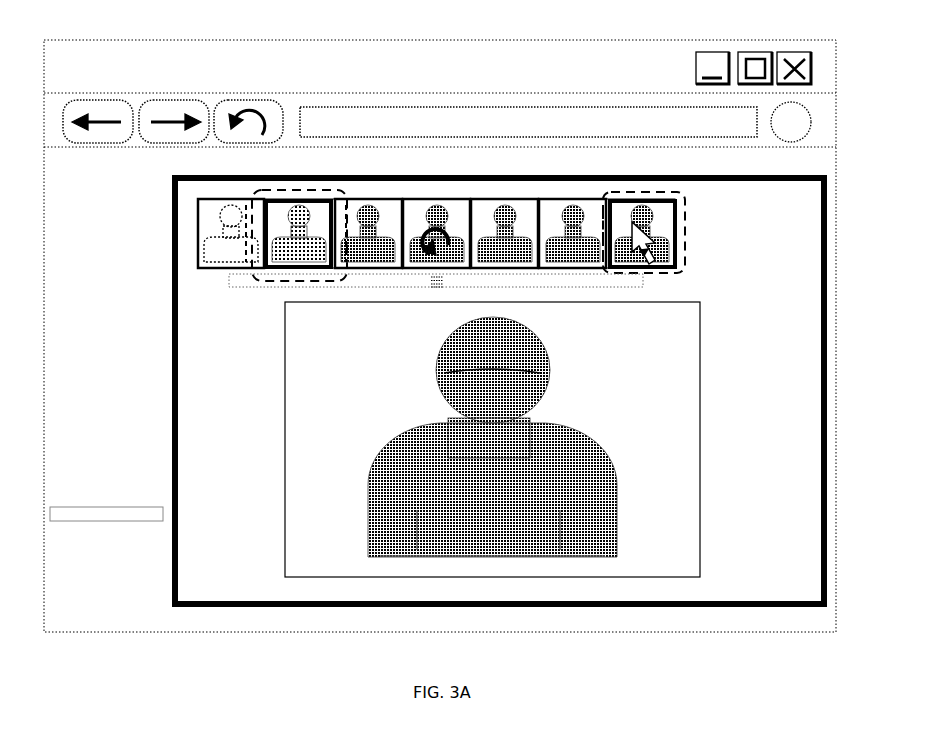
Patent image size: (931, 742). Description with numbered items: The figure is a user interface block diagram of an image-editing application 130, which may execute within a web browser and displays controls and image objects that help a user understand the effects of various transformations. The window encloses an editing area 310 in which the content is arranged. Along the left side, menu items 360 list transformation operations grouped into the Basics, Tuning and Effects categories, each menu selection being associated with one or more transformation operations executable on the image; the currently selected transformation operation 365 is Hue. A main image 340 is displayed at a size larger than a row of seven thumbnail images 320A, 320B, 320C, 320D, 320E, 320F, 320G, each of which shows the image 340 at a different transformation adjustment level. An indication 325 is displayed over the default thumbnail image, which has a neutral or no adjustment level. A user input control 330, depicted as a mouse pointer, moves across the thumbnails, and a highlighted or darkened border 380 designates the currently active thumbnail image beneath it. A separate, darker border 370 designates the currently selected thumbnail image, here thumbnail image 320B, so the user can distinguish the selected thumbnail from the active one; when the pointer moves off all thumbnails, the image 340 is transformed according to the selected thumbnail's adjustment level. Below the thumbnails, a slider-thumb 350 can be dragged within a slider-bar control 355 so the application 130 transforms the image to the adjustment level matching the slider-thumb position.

The image-editing application 130 is at (329, 39).
The image editing area 310 is at (257, 607).
The thumbnail image 320A is at (247, 171).
The thumbnail image 320B is at (319, 171).
The thumbnail image 320C is at (388, 171).
The thumbnail image 320D is at (456, 171).
The thumbnail image 320E is at (521, 171).
The thumbnail image 320F is at (591, 171).
The thumbnail image 320G is at (659, 171).
The indication 325 is at (462, 238).
The user input control 330 is at (668, 268).
The image 340 is at (702, 480).
The slider-thumb 350 is at (430, 280).
The slider-bar control 355 is at (226, 283).
The menu items 360 is at (78, 190).
The currently selected transformation operation 365 is at (162, 509).
The border for selected thumbnail image 370 is at (263, 283).
The border for currently active thumbnail image 380 is at (688, 230).